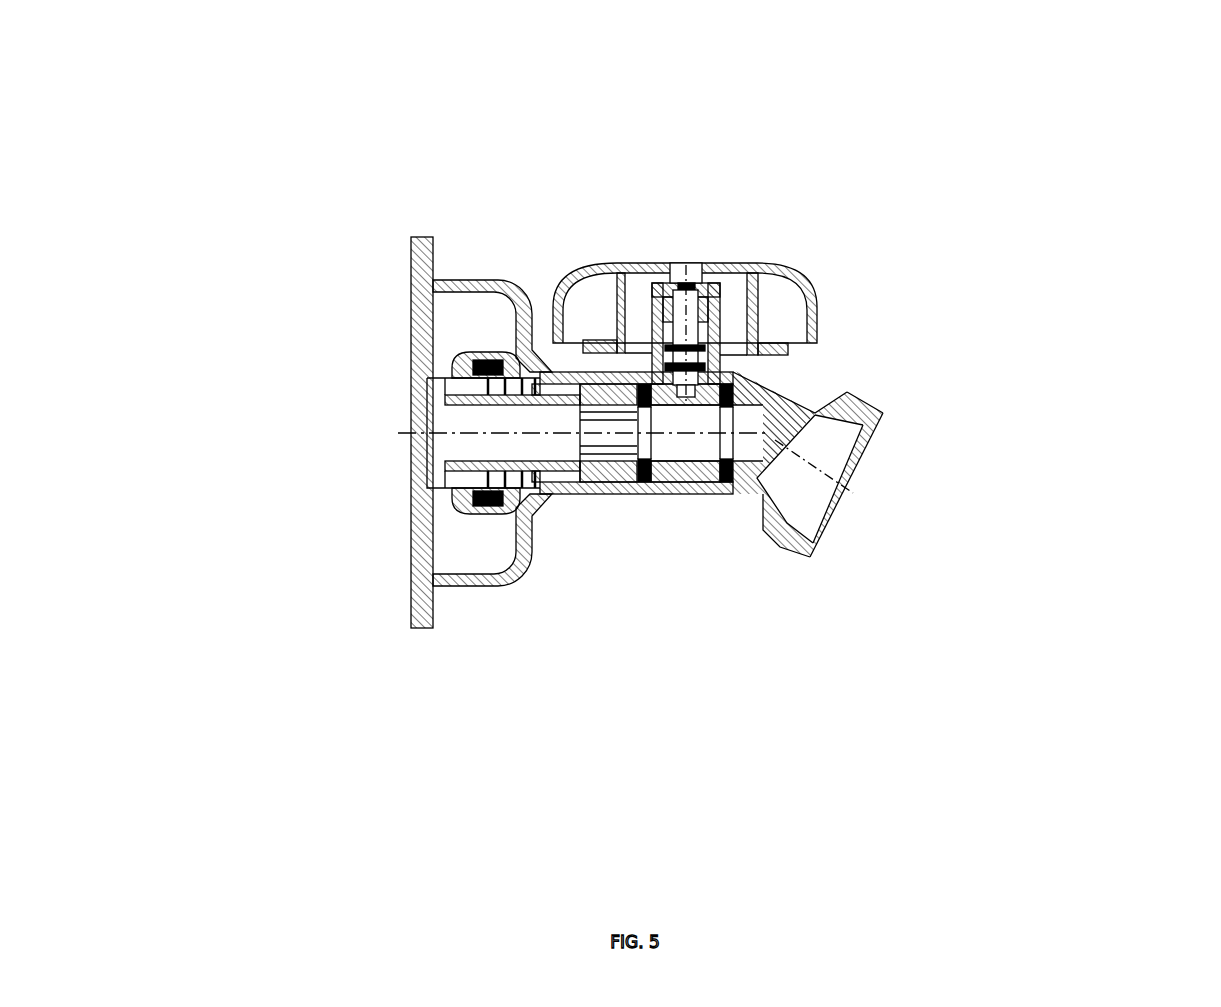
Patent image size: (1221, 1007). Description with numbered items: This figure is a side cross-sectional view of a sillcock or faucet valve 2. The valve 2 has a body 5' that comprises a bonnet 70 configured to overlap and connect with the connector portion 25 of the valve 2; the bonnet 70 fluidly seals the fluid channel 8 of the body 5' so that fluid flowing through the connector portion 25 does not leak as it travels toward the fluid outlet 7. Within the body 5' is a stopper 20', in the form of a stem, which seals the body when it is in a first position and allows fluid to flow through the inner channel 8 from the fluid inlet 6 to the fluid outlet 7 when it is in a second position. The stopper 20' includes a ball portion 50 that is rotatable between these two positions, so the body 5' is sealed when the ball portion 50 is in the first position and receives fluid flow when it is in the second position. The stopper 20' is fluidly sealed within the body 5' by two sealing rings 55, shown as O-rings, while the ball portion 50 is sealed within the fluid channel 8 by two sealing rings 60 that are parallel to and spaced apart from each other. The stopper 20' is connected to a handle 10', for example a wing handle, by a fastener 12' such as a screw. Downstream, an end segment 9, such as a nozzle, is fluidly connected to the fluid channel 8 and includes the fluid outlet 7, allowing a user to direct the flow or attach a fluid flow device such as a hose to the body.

The valve 2 is at (262, 168).
The body 5' is at (689, 618).
The fluid inlet 6 is at (383, 450).
The fluid outlet 7 is at (893, 492).
The fluid channel 8 is at (775, 455).
The end segment 9 is at (884, 413).
The handle 10' is at (827, 261).
The fastener 12' is at (712, 244).
The stopper 20' is at (793, 270).
The connector portion 25 is at (412, 613).
The ball portion 50 is at (748, 393).
The sealing rings 55 is at (655, 318).
The sealing rings 60 is at (637, 495).
The bonnet 70 is at (597, 495).